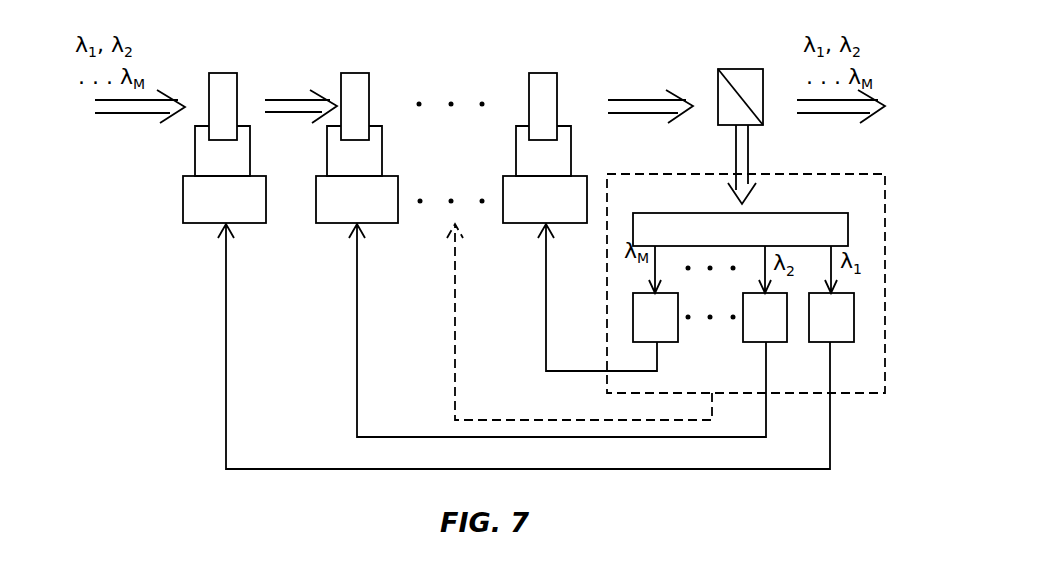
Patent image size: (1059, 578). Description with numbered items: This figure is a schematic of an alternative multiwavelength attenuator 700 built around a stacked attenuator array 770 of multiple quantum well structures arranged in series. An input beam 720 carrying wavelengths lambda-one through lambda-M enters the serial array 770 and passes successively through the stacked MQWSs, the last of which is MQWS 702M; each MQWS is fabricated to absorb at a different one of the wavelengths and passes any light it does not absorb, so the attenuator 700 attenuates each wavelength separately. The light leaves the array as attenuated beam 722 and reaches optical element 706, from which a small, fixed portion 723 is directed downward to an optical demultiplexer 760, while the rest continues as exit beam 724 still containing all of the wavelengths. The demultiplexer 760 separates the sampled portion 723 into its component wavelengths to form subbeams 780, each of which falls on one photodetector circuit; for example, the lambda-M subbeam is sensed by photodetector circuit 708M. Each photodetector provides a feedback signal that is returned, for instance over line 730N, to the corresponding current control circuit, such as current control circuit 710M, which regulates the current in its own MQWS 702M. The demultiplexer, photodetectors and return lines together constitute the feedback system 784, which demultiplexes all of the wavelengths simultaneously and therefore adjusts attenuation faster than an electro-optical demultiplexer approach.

The multiwavelength attenuator 700 is at (161, 451).
The MQWS 702M is at (541, 73).
The beam splitter 706 is at (755, 69).
The photodetector circuit 708M is at (672, 342).
The current control circuit 710M is at (520, 223).
The input beam 720 is at (128, 113).
The attenuated beam 722 is at (640, 114).
The small fixed portion of attenuated beam 723 is at (749, 147).
The exit beam 724 is at (850, 114).
The Nth feedback line 730N is at (545, 355).
The optical demultiplexer 760 is at (815, 213).
The stacked attenuator array 770 is at (626, 62).
The subbeams 780 is at (648, 273).
The feedback system 784 is at (608, 383).